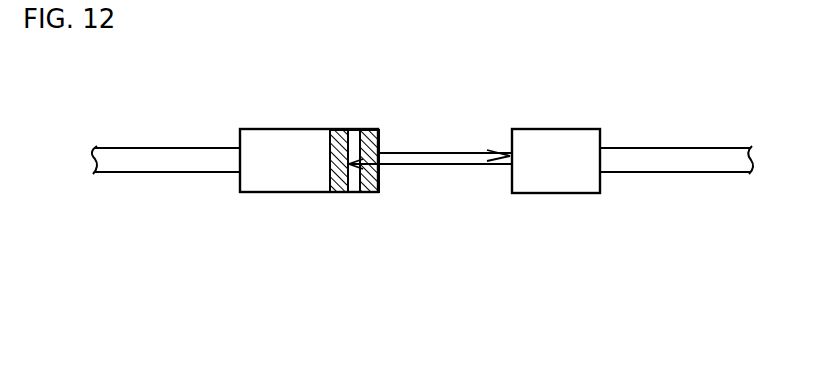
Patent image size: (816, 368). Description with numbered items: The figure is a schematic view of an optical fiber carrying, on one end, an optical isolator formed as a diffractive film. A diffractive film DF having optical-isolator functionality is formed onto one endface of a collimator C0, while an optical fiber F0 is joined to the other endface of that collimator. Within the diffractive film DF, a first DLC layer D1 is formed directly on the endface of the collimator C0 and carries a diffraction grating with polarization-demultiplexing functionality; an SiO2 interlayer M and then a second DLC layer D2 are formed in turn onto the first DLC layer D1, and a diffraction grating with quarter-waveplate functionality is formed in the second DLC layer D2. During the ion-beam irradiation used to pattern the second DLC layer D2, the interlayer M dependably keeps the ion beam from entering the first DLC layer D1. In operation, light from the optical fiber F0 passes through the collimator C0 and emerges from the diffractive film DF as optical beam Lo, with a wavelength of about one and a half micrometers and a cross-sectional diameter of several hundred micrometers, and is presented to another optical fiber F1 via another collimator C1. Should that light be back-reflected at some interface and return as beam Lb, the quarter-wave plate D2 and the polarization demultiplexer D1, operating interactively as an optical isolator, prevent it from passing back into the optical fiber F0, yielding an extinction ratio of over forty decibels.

The optical fiber F0 is at (164, 142).
The collimator C0 is at (291, 122).
The diffractive film DF is at (422, 289).
The first DLC layer D1 is at (337, 197).
The SiO2 interlayer M is at (352, 197).
The second DLC layer D2 is at (370, 197).
The optical beam Lo is at (422, 147).
The back-reflected beam Lb is at (457, 172).
The another collimator C1 is at (555, 125).
The another optical fiber F1 is at (680, 147).